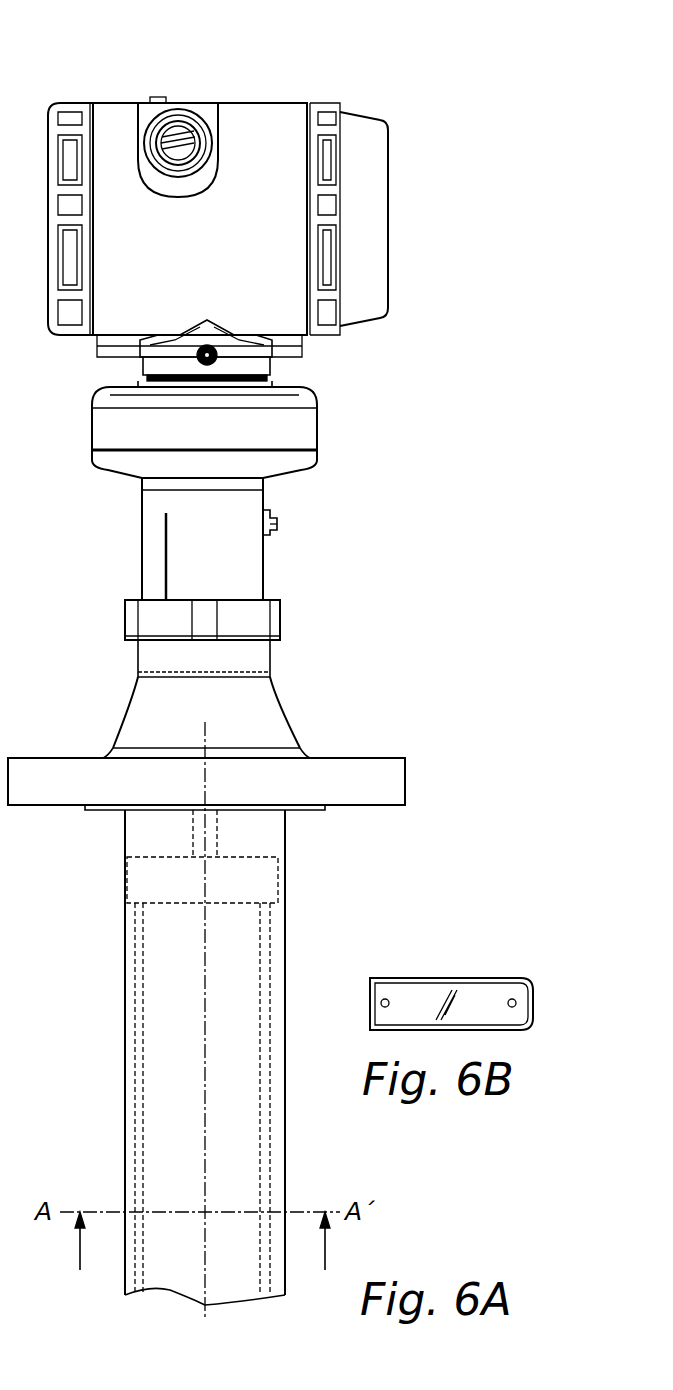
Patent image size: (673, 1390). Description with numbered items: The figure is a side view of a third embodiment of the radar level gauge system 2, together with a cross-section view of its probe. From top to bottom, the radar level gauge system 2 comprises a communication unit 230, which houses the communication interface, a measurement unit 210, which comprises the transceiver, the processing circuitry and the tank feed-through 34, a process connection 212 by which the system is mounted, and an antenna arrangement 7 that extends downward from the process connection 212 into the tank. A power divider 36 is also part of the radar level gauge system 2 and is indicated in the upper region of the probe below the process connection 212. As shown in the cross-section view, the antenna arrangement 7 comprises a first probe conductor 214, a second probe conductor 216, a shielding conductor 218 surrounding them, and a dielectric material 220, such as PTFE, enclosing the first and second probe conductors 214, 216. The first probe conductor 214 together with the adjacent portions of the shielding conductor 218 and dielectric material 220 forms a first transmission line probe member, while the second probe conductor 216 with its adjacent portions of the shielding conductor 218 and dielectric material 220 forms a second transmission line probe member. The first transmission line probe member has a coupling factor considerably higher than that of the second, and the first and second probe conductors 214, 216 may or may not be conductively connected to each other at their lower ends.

In FIG. 6A, the radar level gauge system 2 is at (407, 82).
In FIG. 6A, the communication unit 230 is at (285, 101).
In FIG. 6A, the measurement unit 210 is at (367, 445).
In FIG. 6A, the tank feed-through 34 is at (322, 484).
In FIG. 6A, the process connection 212 is at (358, 672).
In FIG. 6A, the power divider 36 is at (280, 880).
In FIG. 6A, the second probe conductor 216 is at (270, 960).
In FIG. 6B, the second probe conductor 216 is at (516, 1003).
In FIG. 6A, the first probe conductor 214 is at (137, 1008).
In FIG. 6B, the first probe conductor 214 is at (390, 1000).
In FIG. 6A, the shielding conductor 218 is at (287, 1103).
In FIG. 6B, the shielding conductor 218 is at (482, 978).
In FIG. 6B, the antenna arrangement 7 is at (352, 952).
In FIG. 6B, the dielectric material 220 is at (484, 1015).